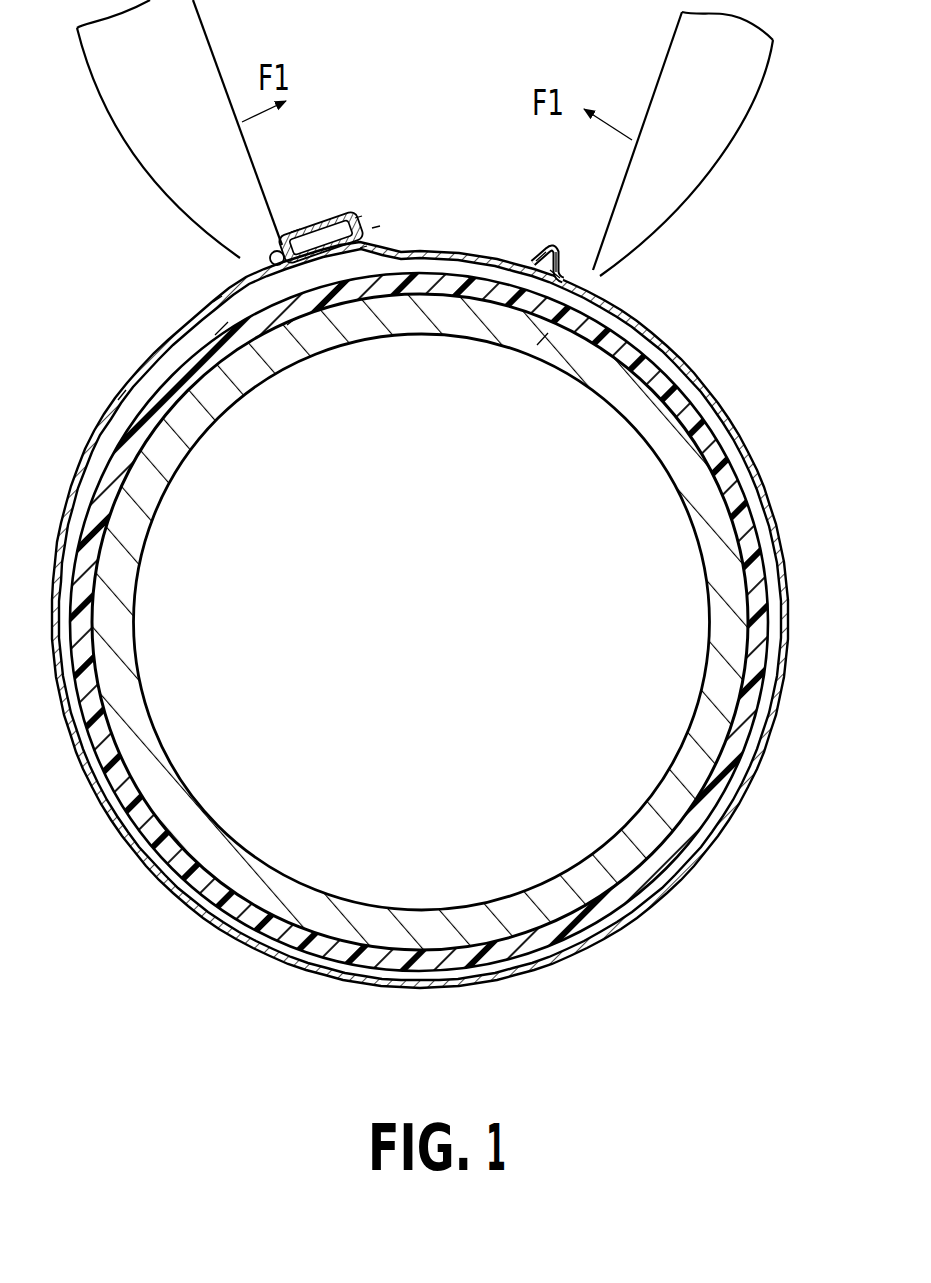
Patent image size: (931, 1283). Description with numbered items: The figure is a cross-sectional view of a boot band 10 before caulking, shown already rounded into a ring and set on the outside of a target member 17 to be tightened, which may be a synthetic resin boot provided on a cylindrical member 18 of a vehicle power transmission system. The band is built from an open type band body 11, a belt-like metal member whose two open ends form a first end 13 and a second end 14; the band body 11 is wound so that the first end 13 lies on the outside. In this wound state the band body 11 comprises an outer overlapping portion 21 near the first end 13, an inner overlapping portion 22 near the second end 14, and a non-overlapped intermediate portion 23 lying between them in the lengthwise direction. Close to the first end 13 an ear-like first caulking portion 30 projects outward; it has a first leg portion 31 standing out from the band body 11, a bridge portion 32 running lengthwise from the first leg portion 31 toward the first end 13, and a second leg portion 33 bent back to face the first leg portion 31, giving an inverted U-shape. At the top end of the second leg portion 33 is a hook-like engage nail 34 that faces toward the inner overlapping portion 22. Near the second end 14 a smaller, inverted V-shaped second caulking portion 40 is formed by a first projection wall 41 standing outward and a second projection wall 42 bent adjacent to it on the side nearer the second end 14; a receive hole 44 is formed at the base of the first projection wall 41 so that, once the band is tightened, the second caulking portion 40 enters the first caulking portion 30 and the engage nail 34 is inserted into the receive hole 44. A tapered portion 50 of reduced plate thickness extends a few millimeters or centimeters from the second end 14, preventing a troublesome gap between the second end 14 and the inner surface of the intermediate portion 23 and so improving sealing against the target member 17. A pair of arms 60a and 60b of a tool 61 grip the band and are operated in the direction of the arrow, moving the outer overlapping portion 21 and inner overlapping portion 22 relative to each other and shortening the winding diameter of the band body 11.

The boot band 10 is at (442, 575).
The band body 11 is at (132, 852).
The first end 13 is at (372, 228).
The second end 14 is at (190, 372).
The target member 17 is at (620, 348).
The cylindrical member 18 is at (537, 345).
The outer overlapping portion 21 is at (213, 302).
The inner overlapping portion 22 is at (287, 325).
The intermediate portion 23 is at (118, 400).
The first caulking portion 30 is at (371, 175).
The first leg portion 31 is at (275, 251).
The bridge portion 32 is at (300, 232).
The second leg portion 33 is at (362, 218).
The engage nail 34 is at (367, 246).
The second caulking portion 40 is at (517, 260).
The first projection wall 41 is at (563, 262).
The second projection wall 42 is at (541, 252).
The receive hole 44 is at (550, 270).
The tapered portion 50 is at (215, 335).
The arm 60a is at (691, 145).
The arm 60b is at (253, 265).
The tool 61 is at (724, 157).